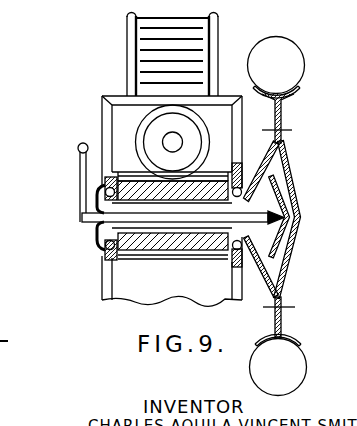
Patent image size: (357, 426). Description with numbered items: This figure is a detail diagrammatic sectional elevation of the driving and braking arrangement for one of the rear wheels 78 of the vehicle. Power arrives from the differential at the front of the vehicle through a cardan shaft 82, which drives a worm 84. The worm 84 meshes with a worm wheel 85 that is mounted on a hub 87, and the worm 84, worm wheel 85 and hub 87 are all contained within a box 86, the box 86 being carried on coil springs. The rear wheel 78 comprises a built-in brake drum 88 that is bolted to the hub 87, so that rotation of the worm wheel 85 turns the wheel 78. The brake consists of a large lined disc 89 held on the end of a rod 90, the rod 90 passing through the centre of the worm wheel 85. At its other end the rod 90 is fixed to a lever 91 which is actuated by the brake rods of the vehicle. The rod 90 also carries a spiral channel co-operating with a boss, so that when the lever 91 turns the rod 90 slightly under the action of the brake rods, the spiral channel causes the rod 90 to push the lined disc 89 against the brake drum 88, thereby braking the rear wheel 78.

The rear wheel 78 is at (282, 318).
The cardan shaft 82 is at (173, 141).
The worm 84 is at (147, 125).
The worm wheel 85 is at (133, 172).
The box 86 is at (241, 116).
The hub 87 is at (272, 158).
The brake drum 88 is at (279, 182).
The lined disc 89 is at (287, 250).
The rod 90 is at (245, 213).
The lever 91 is at (80, 183).